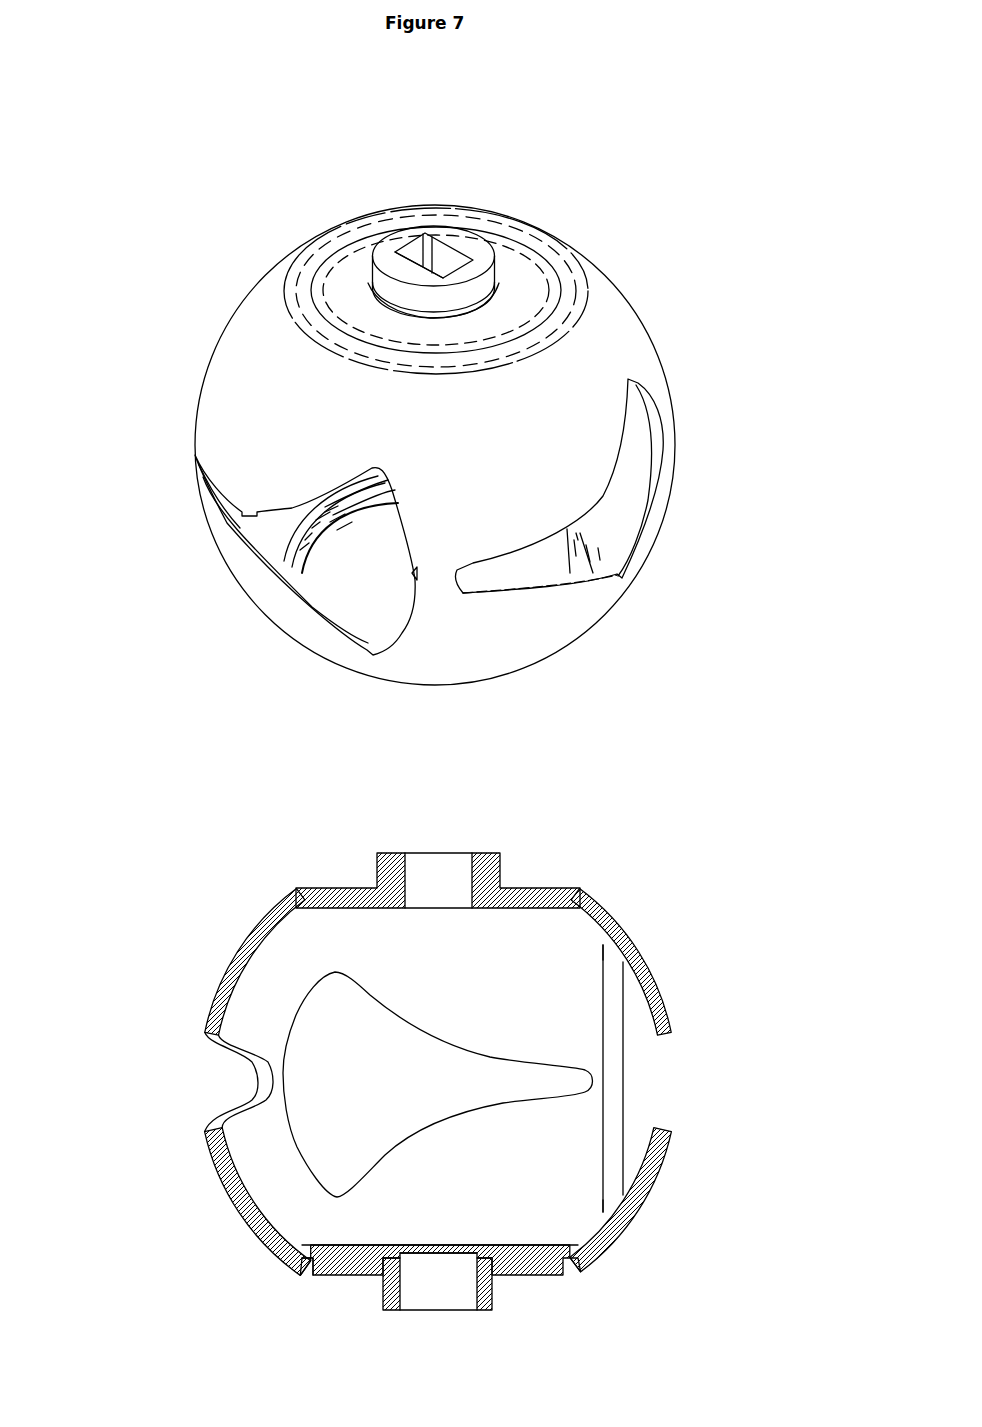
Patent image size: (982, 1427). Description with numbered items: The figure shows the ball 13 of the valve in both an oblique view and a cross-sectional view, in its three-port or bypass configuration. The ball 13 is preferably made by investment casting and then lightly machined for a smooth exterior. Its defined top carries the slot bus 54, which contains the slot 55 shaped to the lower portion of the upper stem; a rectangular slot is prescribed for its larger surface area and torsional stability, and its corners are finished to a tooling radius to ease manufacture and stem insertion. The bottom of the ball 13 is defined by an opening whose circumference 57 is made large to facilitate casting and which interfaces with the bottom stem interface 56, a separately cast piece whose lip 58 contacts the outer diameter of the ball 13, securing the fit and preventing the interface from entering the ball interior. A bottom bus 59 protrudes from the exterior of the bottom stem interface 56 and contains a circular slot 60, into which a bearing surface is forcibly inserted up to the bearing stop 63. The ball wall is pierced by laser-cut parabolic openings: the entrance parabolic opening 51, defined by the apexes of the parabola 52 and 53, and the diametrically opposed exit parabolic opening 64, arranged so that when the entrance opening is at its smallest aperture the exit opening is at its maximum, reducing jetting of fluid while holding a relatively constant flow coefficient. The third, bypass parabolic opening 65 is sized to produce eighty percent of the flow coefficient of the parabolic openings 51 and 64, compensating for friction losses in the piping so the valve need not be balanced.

The ball 13 is at (352, 693).
The parabolic opening 51 is at (441, 1110).
The apex of the parabola 52 is at (589, 1212).
The apex of the parabola 53 is at (589, 950).
The slot bus 54 is at (497, 277).
The slot 55 is at (425, 252).
The bottom stem interface 56 is at (530, 1257).
The opening circumference 57 is at (218, 353).
The lip 58 is at (298, 1273).
The bottom bus 59 is at (383, 1303).
The circular slot 60 is at (463, 1305).
The bearing stop 63 is at (468, 1253).
The exit parabolic opening 64 is at (636, 510).
The parabolic opening 65 is at (330, 567).